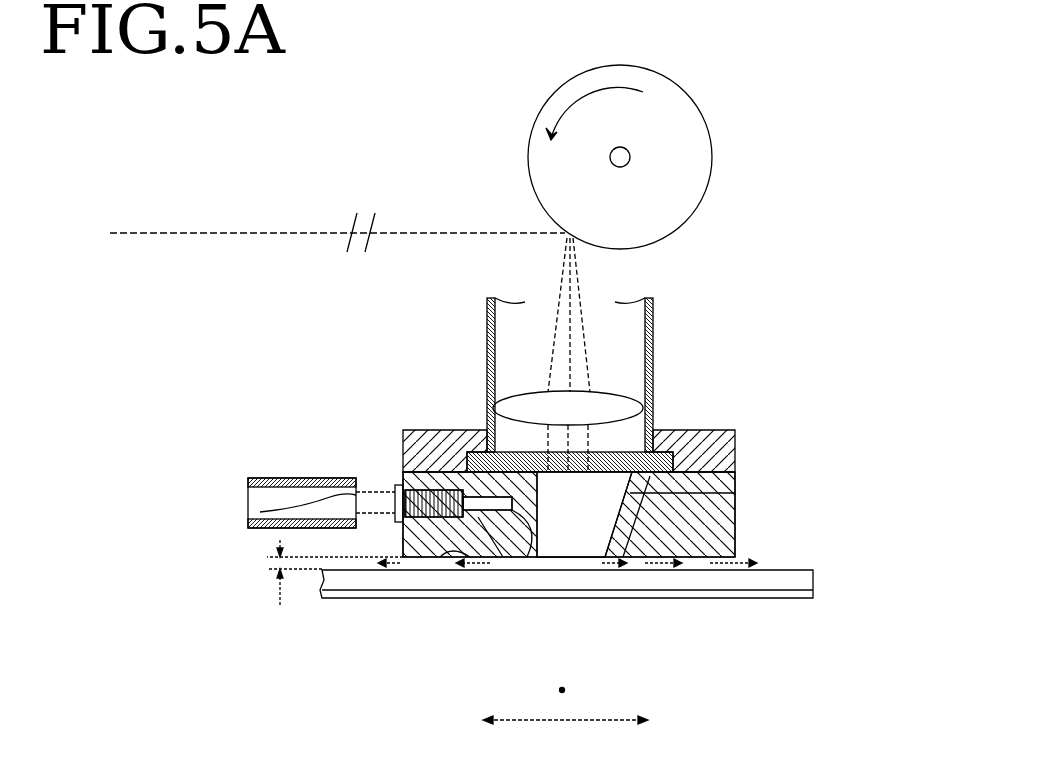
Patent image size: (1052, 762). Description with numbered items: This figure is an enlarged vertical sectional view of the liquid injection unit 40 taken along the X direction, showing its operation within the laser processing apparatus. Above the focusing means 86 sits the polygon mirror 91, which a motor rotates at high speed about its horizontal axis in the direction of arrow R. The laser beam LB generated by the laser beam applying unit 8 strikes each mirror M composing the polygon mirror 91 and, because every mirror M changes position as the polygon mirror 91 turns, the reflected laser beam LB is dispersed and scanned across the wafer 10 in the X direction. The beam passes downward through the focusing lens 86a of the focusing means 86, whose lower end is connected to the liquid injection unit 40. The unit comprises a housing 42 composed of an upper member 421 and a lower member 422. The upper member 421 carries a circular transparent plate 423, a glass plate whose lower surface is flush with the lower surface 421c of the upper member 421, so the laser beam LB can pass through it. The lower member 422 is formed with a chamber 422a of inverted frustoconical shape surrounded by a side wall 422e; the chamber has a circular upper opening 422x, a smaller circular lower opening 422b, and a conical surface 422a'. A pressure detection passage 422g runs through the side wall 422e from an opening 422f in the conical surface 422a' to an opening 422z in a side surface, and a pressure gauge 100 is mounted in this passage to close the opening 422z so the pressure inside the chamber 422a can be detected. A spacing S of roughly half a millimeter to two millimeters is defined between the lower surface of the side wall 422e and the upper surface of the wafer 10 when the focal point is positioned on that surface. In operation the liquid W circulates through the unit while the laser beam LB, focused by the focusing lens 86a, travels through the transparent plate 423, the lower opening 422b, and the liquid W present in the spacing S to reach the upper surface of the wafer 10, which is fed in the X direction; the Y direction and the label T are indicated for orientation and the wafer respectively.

The laser beam applying unit 8 is at (802, 190).
The polygon mirror 91 is at (690, 130).
The arrow R (rotation direction) R is at (568, 107).
The mirror M is at (562, 232).
The laser beam LB is at (165, 238).
The focusing means 86 is at (655, 330).
The focusing lens (fθ lens) 86a is at (625, 398).
The liquid injection unit 40 is at (415, 399).
The housing 42 is at (826, 413).
The upper member 421 is at (735, 438).
The lower surface of the upper member 421c is at (408, 430).
The transparent plate 423 is at (672, 462).
The lower member 422 is at (712, 513).
The chamber 422a is at (771, 533).
The conical surface 422a' is at (709, 483).
The lower opening 422b is at (548, 560).
The side wall 422e is at (405, 475).
The opening 422f is at (507, 557).
The pressure detection passage 422g is at (460, 557).
The upper opening 422x is at (507, 468).
The opening 422z is at (260, 512).
The pressure gauge 100 is at (262, 478).
The wafer 10 is at (800, 580).
The workpiece thickness / sheet T is at (780, 600).
The spacing S is at (309, 593).
The liquid W is at (567, 557).
The X direction X is at (565, 736).
The Y axis direction Y is at (574, 689).